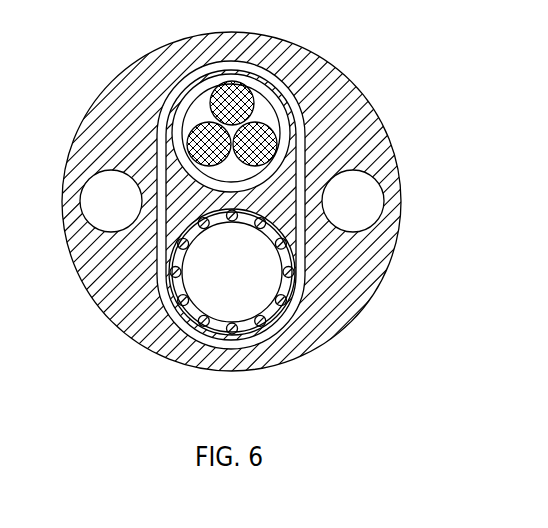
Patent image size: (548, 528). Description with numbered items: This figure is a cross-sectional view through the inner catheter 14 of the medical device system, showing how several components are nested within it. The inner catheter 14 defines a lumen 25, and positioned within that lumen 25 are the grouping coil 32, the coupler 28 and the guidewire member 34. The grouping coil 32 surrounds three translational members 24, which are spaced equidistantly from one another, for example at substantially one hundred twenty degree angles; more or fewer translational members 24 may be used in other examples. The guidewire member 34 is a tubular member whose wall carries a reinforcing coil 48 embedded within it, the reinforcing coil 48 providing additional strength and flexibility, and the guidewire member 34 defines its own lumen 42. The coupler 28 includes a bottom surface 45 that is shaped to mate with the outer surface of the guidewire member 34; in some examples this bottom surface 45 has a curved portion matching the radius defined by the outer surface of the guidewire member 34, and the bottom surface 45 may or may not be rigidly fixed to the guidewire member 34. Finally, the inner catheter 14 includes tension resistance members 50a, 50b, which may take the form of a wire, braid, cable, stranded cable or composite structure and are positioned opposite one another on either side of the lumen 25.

The inner catheter 14 is at (372, 116).
The translational members 24 is at (206, 96).
The lumen 25 is at (173, 136).
The coupler 28 is at (85, 281).
The grouping coil 32 is at (236, 79).
The guidewire member 34 is at (207, 342).
The lumen of the guidewire member 42 is at (261, 278).
The bottom surface 45 is at (296, 224).
The reinforcing coil 48 is at (260, 323).
The tension resistance member 50a is at (97, 185).
The tension resistance member 50b is at (367, 190).